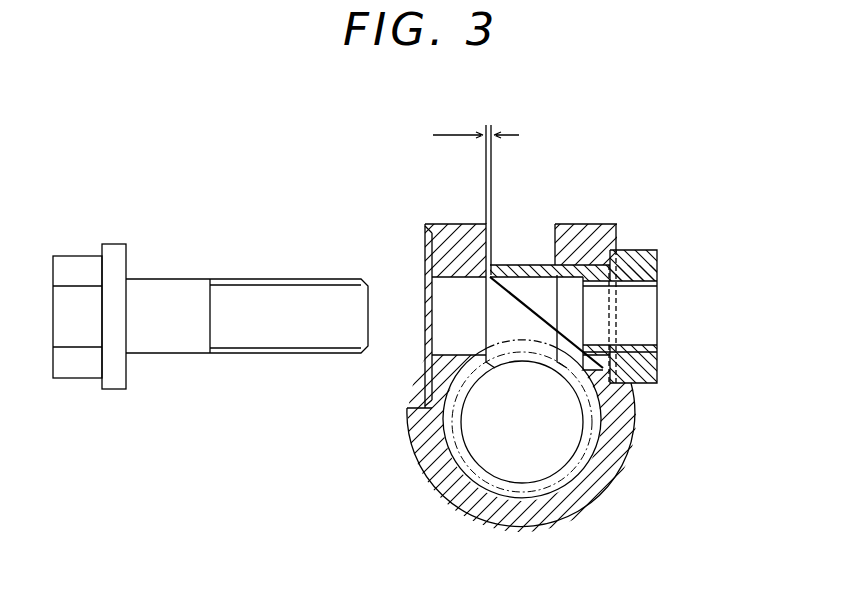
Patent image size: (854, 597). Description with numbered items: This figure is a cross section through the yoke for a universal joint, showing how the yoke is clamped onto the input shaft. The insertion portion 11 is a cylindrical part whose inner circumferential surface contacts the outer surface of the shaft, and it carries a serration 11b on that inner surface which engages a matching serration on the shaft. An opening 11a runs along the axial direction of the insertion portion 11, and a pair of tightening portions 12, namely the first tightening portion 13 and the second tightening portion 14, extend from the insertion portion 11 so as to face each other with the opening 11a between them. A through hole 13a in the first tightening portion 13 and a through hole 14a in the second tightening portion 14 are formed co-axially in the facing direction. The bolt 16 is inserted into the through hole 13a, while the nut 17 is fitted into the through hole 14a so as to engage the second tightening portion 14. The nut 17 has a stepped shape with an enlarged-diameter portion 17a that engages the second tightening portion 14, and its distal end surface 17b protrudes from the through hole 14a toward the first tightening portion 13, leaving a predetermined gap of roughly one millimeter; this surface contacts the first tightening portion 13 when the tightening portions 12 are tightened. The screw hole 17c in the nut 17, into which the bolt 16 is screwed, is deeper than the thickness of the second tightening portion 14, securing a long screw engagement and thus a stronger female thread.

The insertion portion 11 is at (612, 484).
The opening 11a is at (521, 318).
The serration 11b is at (484, 449).
The pair of tightening portions 12 is at (520, 288).
The first tightening portion 13 is at (413, 289).
The through hole 13a is at (433, 293).
The second tightening portion 14 is at (599, 275).
The through hole 14a is at (557, 292).
The bolt 16 is at (72, 259).
The nut 17 is at (617, 271).
The enlarged-diameter portion 17a is at (652, 250).
The distal end surface 17b is at (490, 275).
The screw hole 17c is at (640, 338).